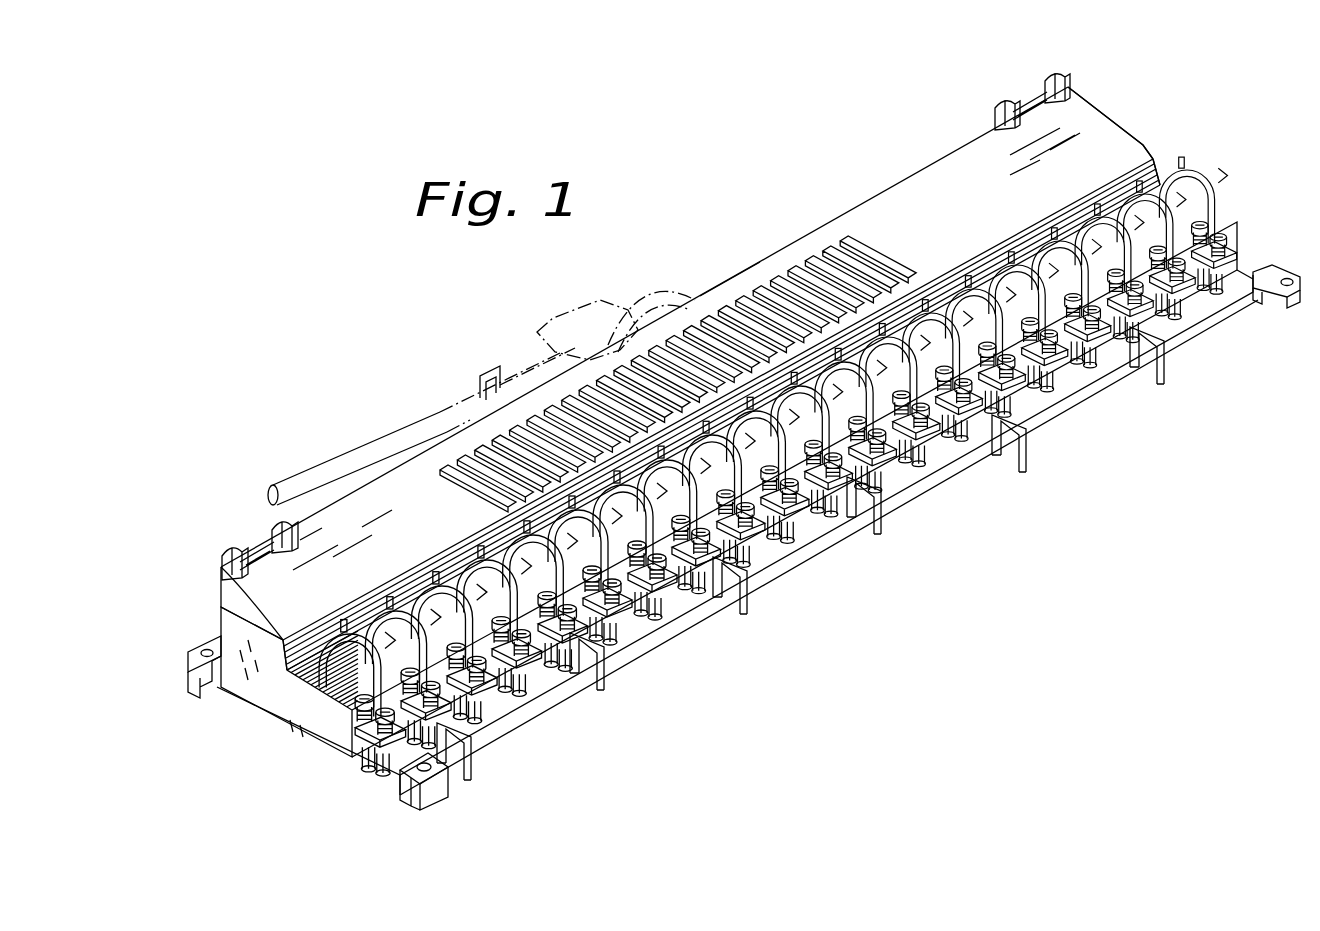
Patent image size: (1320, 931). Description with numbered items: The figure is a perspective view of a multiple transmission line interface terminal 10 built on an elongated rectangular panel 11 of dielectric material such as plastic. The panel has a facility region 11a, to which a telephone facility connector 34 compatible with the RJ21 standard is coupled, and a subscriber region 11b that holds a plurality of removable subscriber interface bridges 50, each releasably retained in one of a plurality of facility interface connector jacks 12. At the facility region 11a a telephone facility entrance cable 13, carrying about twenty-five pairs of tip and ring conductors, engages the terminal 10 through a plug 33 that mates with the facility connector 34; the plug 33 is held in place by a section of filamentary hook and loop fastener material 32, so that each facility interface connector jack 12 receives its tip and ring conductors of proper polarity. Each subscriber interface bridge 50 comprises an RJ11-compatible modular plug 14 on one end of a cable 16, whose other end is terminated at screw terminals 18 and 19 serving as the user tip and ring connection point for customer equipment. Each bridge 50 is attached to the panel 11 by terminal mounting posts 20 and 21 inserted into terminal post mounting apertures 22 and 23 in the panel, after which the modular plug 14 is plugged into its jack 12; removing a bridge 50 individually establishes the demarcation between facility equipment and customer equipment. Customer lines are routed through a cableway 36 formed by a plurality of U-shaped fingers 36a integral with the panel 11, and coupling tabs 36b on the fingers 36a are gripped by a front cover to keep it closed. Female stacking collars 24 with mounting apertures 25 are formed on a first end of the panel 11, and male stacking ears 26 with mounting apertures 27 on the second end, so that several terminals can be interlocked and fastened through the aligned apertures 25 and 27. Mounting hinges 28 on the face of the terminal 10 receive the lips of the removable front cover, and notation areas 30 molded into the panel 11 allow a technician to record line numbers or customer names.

The multiple transmission line interface terminal 10 is at (766, 250).
The elongated rectangular panel 11 is at (972, 199).
The facility region 11a is at (1191, 142).
The subscriber region 11b is at (1068, 405).
The facility interface connector jack 12 is at (330, 668).
The telephone facility entrance cable 13 is at (352, 458).
The modular plug 14 is at (352, 687).
The cable 16 is at (352, 638).
The screw terminal 18 is at (360, 707).
The screw terminal 19 is at (372, 735).
The terminal mounting post 20 is at (375, 748).
The terminal mounting post 21 is at (392, 768).
The terminal post mounting aperture 22 is at (385, 760).
The terminal post mounting aperture 23 is at (398, 778).
The female stacking collar 24 is at (194, 676).
The mounting aperture 25 is at (207, 646).
The male stacking ear 26 is at (1290, 293).
The mounting aperture 27 is at (1289, 278).
The mounting hinge 28 is at (262, 540).
The notation area 30 is at (862, 262).
The filamentary hook and loop fastener material 32 is at (546, 322).
The plug 33 is at (657, 300).
The telephone facility connector 34 is at (497, 370).
The cableway 36 is at (905, 525).
The U-shaped finger 36a is at (882, 522).
The coupling tab 36b is at (732, 592).
The subscriber interface bridge 50 is at (1238, 196).